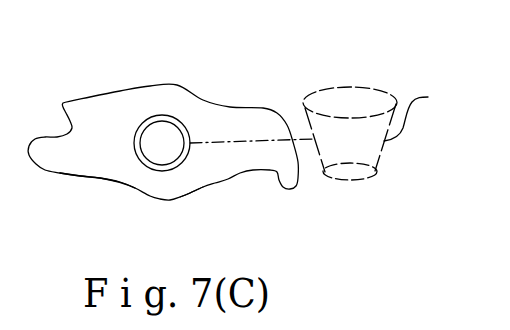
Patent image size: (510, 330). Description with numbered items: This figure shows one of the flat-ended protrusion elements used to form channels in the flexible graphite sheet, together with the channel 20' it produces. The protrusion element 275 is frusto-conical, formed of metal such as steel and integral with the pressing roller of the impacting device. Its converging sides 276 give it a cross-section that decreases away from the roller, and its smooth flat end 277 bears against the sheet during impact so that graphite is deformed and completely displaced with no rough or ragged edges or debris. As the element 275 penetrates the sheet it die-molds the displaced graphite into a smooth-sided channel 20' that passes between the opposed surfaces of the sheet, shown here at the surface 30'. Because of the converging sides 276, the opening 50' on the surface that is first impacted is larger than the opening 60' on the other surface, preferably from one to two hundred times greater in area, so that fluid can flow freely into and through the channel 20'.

The channel 20' is at (163, 129).
The lower jaw portion 30' is at (235, 197).
The lower portion 50' is at (98, 196).
The pivot ring 60' is at (200, 121).
The protrusion element 275 is at (353, 86).
The converging sides 276 is at (429, 111).
The flat end 277 is at (372, 174).